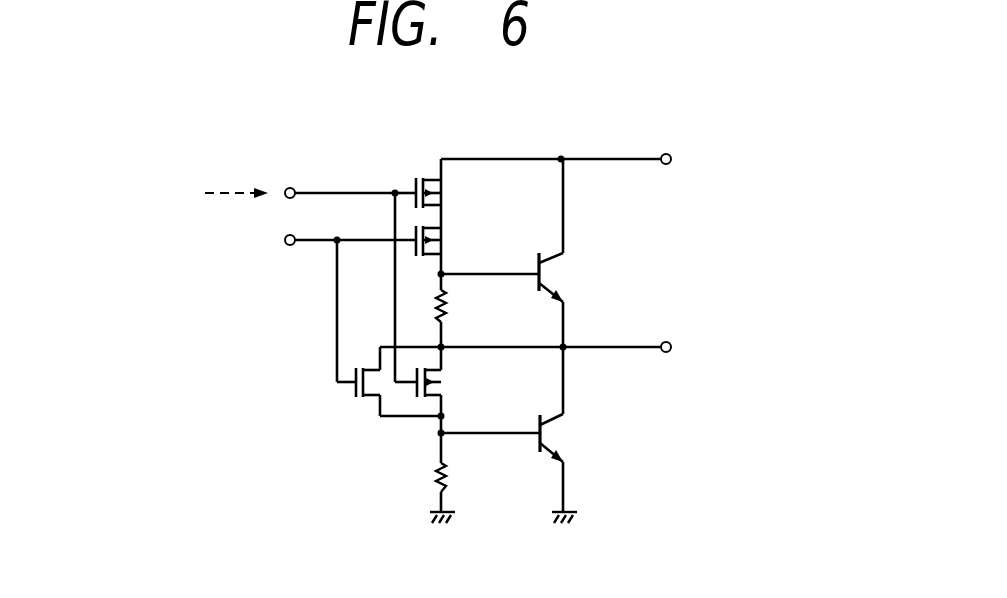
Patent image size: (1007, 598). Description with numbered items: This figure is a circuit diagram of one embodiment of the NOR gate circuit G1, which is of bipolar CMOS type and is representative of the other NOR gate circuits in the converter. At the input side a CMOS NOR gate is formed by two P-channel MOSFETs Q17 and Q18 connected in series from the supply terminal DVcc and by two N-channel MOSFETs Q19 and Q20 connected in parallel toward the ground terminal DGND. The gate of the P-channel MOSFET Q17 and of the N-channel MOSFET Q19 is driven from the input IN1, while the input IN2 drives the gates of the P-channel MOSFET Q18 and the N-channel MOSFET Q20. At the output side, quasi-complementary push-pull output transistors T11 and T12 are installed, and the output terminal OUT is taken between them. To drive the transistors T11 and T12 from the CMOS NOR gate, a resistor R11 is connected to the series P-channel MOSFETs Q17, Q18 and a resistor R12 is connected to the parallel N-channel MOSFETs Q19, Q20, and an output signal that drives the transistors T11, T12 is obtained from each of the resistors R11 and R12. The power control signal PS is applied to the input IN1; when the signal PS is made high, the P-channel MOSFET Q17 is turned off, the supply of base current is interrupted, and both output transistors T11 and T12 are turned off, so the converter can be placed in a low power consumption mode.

The NOR gate circuit G1 is at (550, 134).
The power control signal PS is at (147, 222).
The input IN1 is at (335, 178).
The input IN2 is at (345, 255).
The P-channel MOSFET Q17 is at (443, 195).
The P-channel MOSFET Q18 is at (454, 243).
The N-channel MOSFET Q19 is at (455, 383).
The N-channel MOSFET Q20 is at (353, 401).
The resistor R11 is at (462, 309).
The resistor R12 is at (463, 480).
The output transistor T11 is at (570, 277).
The output transistor T12 is at (573, 438).
The power supply terminal DVcc is at (698, 160).
The output terminal OUT is at (689, 349).
The ground terminal DGND is at (503, 530).